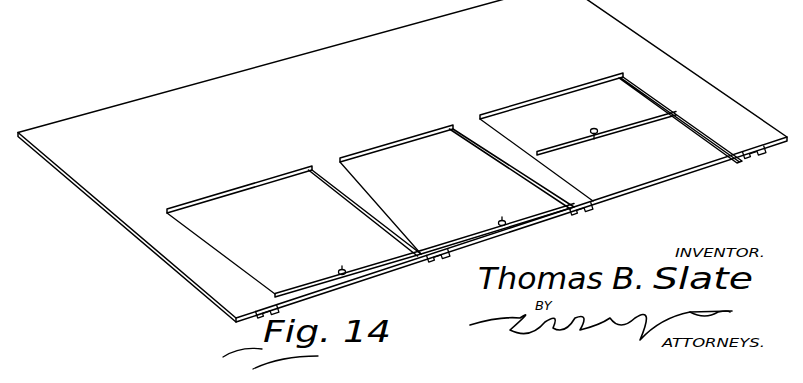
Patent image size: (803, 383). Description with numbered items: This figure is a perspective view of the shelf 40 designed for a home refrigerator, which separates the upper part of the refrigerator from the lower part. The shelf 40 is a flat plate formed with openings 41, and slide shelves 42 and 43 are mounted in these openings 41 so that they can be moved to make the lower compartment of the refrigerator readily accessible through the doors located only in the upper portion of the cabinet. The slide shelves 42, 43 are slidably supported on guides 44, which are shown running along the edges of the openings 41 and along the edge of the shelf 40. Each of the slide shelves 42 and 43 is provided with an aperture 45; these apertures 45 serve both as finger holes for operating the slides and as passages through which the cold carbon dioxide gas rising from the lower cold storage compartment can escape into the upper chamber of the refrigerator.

The shelf 40 is at (402, 161).
The openings 41 is at (253, 182).
The slide shelf 42 is at (454, 187).
The slide shelf 43 is at (457, 191).
The guides 44 is at (596, 208).
The apertures 45 is at (345, 267).